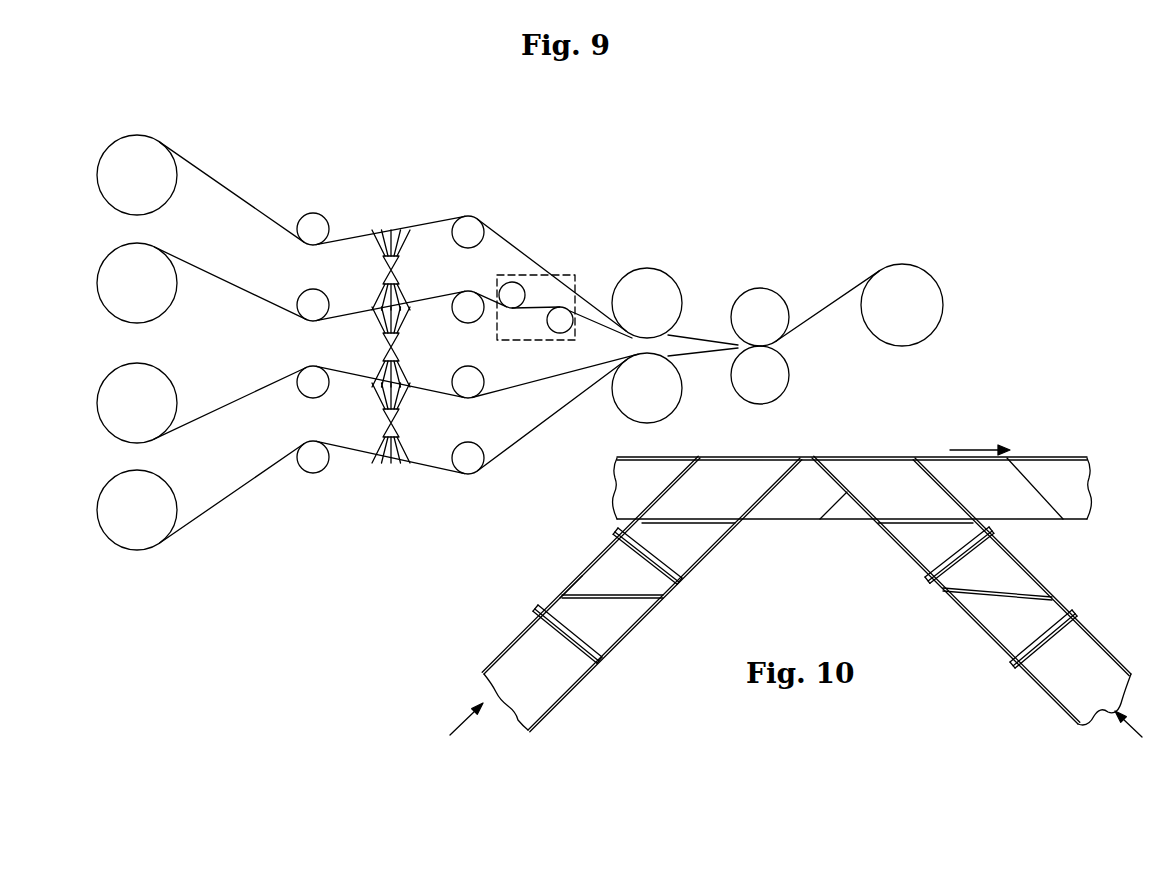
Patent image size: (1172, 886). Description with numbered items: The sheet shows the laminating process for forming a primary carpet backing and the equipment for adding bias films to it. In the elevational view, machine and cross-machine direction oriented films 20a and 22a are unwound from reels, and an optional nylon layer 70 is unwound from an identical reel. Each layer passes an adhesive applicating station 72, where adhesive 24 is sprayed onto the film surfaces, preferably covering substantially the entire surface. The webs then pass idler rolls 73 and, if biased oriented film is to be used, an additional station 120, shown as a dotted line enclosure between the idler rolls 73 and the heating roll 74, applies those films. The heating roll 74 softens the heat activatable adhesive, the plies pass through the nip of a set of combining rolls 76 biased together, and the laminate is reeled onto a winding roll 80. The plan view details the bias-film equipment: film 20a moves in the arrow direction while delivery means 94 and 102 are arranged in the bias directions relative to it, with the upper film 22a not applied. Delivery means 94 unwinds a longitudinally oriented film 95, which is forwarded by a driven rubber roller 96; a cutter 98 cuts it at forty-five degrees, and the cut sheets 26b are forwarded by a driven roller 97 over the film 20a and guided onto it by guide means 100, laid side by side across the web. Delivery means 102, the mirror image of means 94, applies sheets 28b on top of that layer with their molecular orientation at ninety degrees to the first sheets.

In FIG. 9, the machine direction oriented film 20a is at (235, 287).
In FIG. 10, the machine direction oriented film 20a is at (660, 490).
In FIG. 9, the cross-machine direction oriented film 22a is at (235, 193).
In FIG. 9, the nylon layer 70 is at (243, 485).
In FIG. 9, the adhesive applicating station 72 is at (399, 261).
In FIG. 9, the adhesive 24 is at (377, 394).
In FIG. 9, the idler rolls 73 is at (463, 320).
In FIG. 9, the station 120 is at (533, 275).
In FIG. 9, the heating roll 74 is at (635, 314).
In FIG. 9, the combining rolls 76 is at (748, 328).
In FIG. 9, the winding roll 80 is at (889, 309).
In FIG. 10, the guide means 100 is at (769, 457).
In FIG. 10, the cut sheets 26b is at (643, 584).
In FIG. 10, the sheets 28b is at (952, 553).
In FIG. 10, the delivery means 94 is at (680, 601).
In FIG. 10, the film 95 is at (538, 678).
In FIG. 10, the driven rubber roller 96 is at (603, 660).
In FIG. 10, the driven roller 97 is at (684, 581).
In FIG. 10, the cutter 98 is at (567, 589).
In FIG. 10, the delivery means 102 is at (948, 614).